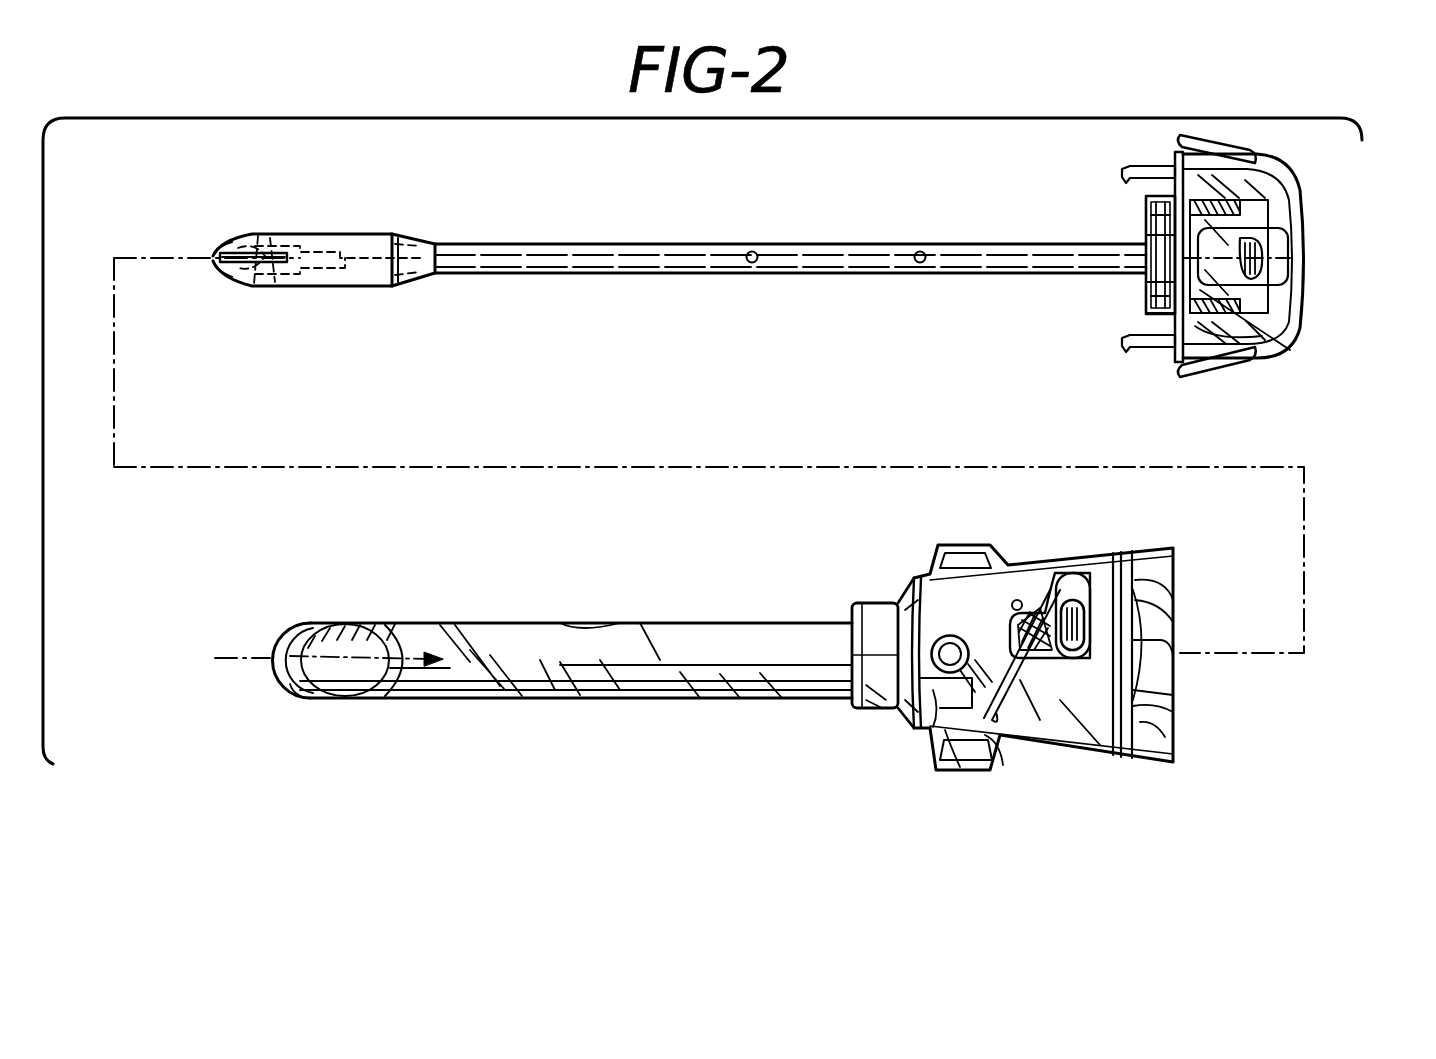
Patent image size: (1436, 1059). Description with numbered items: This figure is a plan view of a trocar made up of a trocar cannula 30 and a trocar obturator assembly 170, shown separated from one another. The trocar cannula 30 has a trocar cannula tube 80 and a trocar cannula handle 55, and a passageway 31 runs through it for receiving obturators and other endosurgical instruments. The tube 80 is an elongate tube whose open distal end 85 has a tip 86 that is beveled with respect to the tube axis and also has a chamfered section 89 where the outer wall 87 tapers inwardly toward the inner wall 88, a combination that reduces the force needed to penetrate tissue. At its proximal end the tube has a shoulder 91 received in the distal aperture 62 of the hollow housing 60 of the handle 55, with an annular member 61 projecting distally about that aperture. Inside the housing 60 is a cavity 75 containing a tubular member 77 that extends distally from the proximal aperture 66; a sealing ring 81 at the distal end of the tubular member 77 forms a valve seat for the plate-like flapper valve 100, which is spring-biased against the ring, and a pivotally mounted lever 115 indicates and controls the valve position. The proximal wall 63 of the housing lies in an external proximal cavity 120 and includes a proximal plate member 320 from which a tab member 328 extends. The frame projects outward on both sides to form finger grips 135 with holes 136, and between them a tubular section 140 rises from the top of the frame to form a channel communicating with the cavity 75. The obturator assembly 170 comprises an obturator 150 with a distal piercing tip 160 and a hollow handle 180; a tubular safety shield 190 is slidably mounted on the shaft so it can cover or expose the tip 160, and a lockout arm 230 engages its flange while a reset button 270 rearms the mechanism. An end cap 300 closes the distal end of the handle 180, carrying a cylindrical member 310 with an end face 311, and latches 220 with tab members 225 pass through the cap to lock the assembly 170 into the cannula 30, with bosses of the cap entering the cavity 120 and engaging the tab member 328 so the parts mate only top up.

The trocar cannula 30 is at (660, 775).
The passageway 31 is at (290, 656).
The trocar cannula handle 55 is at (1157, 780).
The housing 60 is at (935, 585).
The annular member 61 is at (885, 600).
The distal aperture 62 is at (855, 610).
The proximal wall 63 is at (1130, 560).
The proximal aperture 66 is at (1165, 602).
The cavity 75 is at (985, 625).
The tubular member 77 is at (1100, 754).
The trocar cannula tube 80 is at (716, 615).
The sealing ring 81 is at (1020, 742).
The open distal end 85 is at (362, 622).
The tip 86 is at (296, 690).
The outer wall 87 is at (588, 625).
The inner wall 88 is at (620, 625).
The chamfered section 89 is at (285, 672).
The shoulder 91 is at (850, 714).
The flapper valve 100 is at (948, 714).
The lever 115 is at (1068, 600).
The external proximal cavity 120 is at (1160, 714).
The finger grips 135 is at (945, 770).
The holes 136 is at (996, 767).
The tubular section 140 is at (950, 636).
The obturator 150 is at (372, 250).
The piercing tip 160 is at (216, 254).
The trocar obturator assembly 170 is at (706, 382).
The trocar obturator handle 180 is at (1310, 175).
The safety shield 190 is at (576, 285).
The latches 220 is at (1238, 148).
The tab member 225 is at (1136, 165).
The lockout arm 230 is at (1298, 322).
The reset button 270 is at (1262, 252).
The end cap 300 is at (1132, 201).
The cylindrical member 310 is at (1130, 338).
The end face 311 is at (1146, 299).
The proximal plate member 320 is at (1180, 690).
The tab member 328 is at (1175, 632).